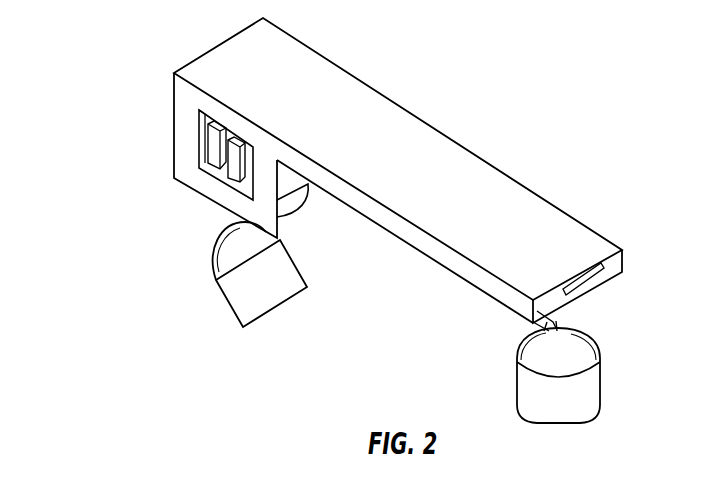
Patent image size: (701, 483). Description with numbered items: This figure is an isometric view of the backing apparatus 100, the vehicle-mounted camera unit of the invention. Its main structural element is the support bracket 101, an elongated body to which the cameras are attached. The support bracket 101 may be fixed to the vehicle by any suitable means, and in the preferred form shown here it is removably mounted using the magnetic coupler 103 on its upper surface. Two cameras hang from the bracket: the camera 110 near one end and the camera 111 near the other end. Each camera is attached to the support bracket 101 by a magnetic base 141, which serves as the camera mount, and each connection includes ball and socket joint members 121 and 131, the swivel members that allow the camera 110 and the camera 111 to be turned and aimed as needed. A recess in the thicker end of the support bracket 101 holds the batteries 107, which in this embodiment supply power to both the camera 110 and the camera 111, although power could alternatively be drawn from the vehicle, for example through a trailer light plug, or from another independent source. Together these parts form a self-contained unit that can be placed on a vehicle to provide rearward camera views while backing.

The backing apparatus 100 is at (118, 52).
The support bracket 101 is at (365, 97).
The magnetic coupler 103 is at (246, 30).
The batteries 107 is at (232, 158).
The camera 110 is at (240, 303).
The camera 111 is at (588, 383).
The ball and socket joint member 121 is at (553, 314).
The ball and socket joint member 131 is at (532, 318).
The magnetic base 141 is at (285, 212).